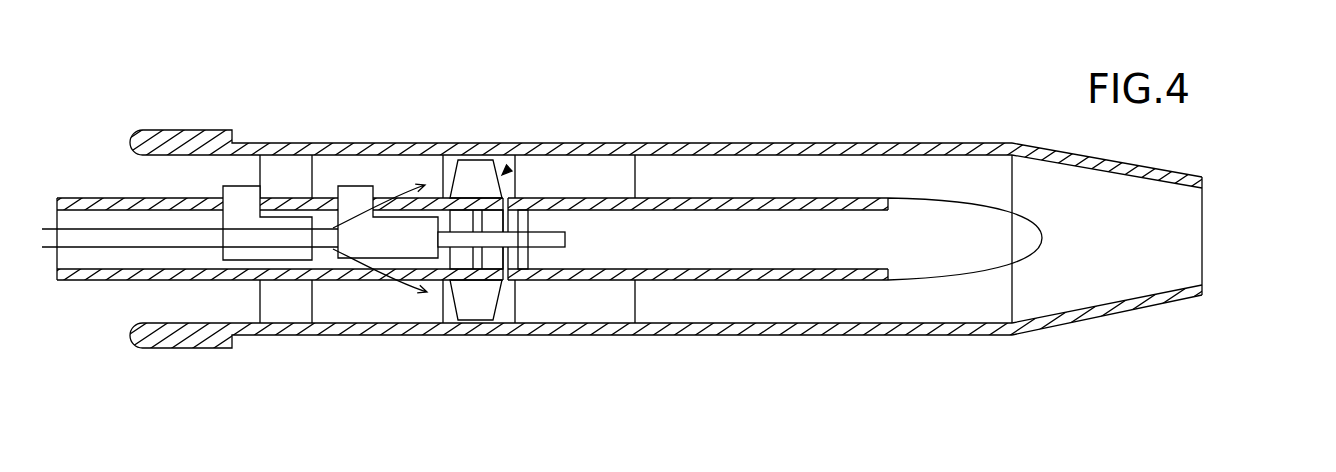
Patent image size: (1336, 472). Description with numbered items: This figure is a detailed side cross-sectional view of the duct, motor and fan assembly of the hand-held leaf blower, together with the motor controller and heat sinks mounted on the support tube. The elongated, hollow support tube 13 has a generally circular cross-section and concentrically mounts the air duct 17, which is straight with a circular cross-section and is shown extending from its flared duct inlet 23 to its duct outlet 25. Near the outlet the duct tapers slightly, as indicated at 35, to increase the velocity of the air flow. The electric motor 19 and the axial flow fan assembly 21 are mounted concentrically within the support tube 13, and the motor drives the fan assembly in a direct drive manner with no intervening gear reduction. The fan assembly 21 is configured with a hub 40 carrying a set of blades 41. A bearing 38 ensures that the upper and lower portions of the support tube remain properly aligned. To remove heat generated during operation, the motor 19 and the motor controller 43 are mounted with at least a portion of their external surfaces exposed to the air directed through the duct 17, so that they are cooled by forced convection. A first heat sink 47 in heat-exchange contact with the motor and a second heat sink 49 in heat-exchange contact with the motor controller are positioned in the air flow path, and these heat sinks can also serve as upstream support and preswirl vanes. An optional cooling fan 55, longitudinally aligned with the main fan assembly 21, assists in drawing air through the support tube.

The support tube 13 is at (817, 198).
The air duct 17 is at (688, 143).
The electric motor 19 is at (423, 217).
The fan assembly 21 is at (502, 175).
The duct inlet 23 is at (137, 177).
The duct outlet 25 is at (1205, 240).
The tapered outlet portion 35 is at (1113, 315).
The bearing 38 is at (527, 232).
The hub 40 is at (461, 283).
The blades 41 is at (470, 160).
The motor controller 43 is at (223, 223).
The first heat sink 47 is at (240, 186).
The second heat sink 49 is at (353, 186).
The cooling fan 55 is at (476, 262).